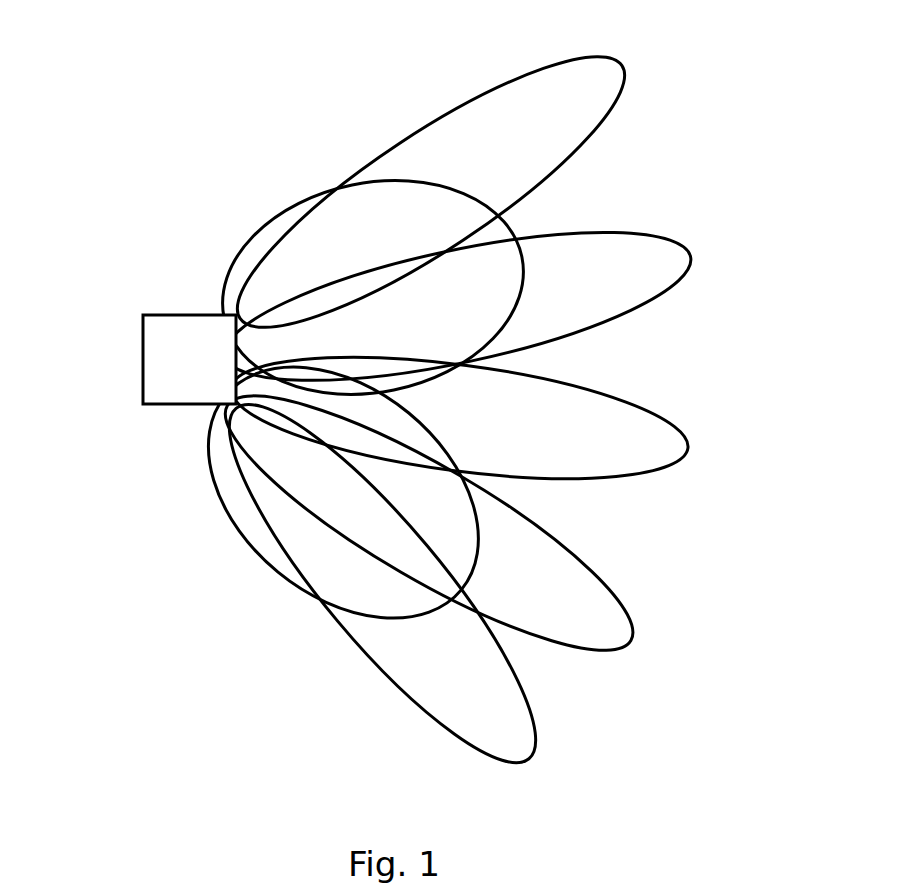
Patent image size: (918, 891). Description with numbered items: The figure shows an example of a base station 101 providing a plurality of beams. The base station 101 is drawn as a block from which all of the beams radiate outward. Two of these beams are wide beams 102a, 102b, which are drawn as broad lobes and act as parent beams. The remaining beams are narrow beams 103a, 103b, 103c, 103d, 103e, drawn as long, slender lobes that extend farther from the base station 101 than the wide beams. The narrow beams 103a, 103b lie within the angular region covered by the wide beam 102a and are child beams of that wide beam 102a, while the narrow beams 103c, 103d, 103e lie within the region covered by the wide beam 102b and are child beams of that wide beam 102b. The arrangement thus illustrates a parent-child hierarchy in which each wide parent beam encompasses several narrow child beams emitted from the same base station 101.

The base station 101 is at (145, 352).
The wide beam 102a is at (260, 233).
The wide beam 102b is at (250, 542).
The narrow beam 103a is at (625, 70).
The narrow beam 103b is at (693, 262).
The narrow beam 103c is at (690, 447).
The narrow beam 103d is at (637, 634).
The narrow beam 103e is at (536, 733).